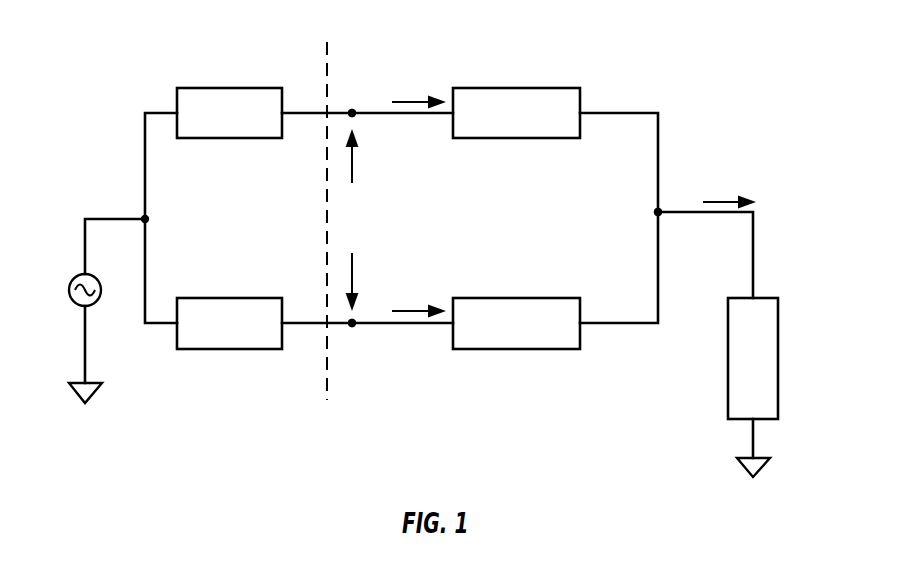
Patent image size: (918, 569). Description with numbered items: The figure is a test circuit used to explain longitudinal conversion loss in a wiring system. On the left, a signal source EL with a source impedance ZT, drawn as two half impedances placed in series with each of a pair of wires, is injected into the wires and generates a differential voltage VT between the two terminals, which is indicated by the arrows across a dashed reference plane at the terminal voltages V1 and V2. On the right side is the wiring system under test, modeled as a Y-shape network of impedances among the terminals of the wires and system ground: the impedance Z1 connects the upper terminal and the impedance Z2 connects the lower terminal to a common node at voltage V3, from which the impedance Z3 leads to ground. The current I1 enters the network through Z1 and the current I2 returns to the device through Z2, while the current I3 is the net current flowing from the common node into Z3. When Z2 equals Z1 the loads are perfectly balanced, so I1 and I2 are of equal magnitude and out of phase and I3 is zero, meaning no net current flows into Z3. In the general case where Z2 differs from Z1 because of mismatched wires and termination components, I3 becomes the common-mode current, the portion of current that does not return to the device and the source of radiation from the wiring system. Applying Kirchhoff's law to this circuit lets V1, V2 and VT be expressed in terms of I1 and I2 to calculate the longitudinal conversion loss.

The signal source EL is at (70, 288).
The source impedance ZT is at (229, 218).
The impedance Z1 is at (516, 113).
The impedance Z2 is at (516, 323).
The impedance Z3 is at (753, 358).
The voltage V1 is at (352, 95).
The voltage V2 is at (352, 349).
The voltage V3 is at (675, 233).
The differential voltage VT is at (352, 220).
The current I1 is at (417, 87).
The current I2 is at (417, 297).
The common-mode current I3 is at (716, 192).